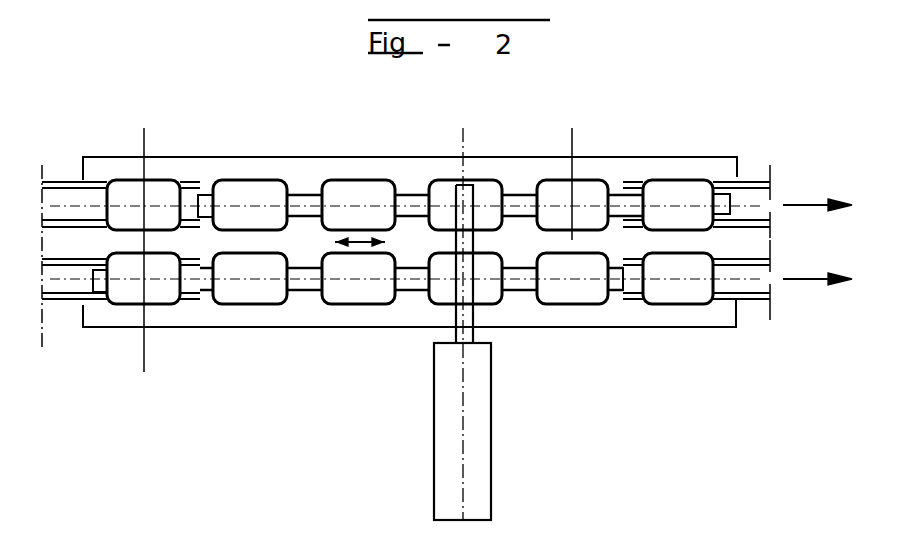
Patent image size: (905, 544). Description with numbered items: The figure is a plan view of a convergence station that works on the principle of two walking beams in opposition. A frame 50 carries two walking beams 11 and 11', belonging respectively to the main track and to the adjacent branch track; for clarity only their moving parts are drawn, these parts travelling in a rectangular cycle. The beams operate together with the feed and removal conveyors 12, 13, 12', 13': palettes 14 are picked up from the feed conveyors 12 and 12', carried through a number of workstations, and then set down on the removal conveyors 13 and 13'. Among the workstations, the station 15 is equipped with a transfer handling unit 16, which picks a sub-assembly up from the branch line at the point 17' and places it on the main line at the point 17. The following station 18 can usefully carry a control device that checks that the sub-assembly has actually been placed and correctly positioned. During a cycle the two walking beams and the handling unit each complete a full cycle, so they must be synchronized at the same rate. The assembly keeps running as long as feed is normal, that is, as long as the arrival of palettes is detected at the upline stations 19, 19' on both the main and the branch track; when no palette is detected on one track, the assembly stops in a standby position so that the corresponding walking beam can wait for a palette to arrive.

The walking beam 11 is at (315, 155).
The walking beam 11' is at (296, 328).
The feed conveyor 12 is at (121, 225).
The feed conveyor 12' is at (121, 325).
The removal conveyor 13 is at (708, 165).
The removal conveyor 13' is at (689, 314).
The palette 14 is at (243, 195).
The station 15 is at (463, 145).
The transfer handling unit 16 is at (483, 400).
The point 17 is at (508, 178).
The point 17' is at (425, 327).
The station 18 is at (572, 130).
The upline station 19 is at (168, 161).
The upline station 19' is at (179, 320).
The frame 50 is at (660, 328).